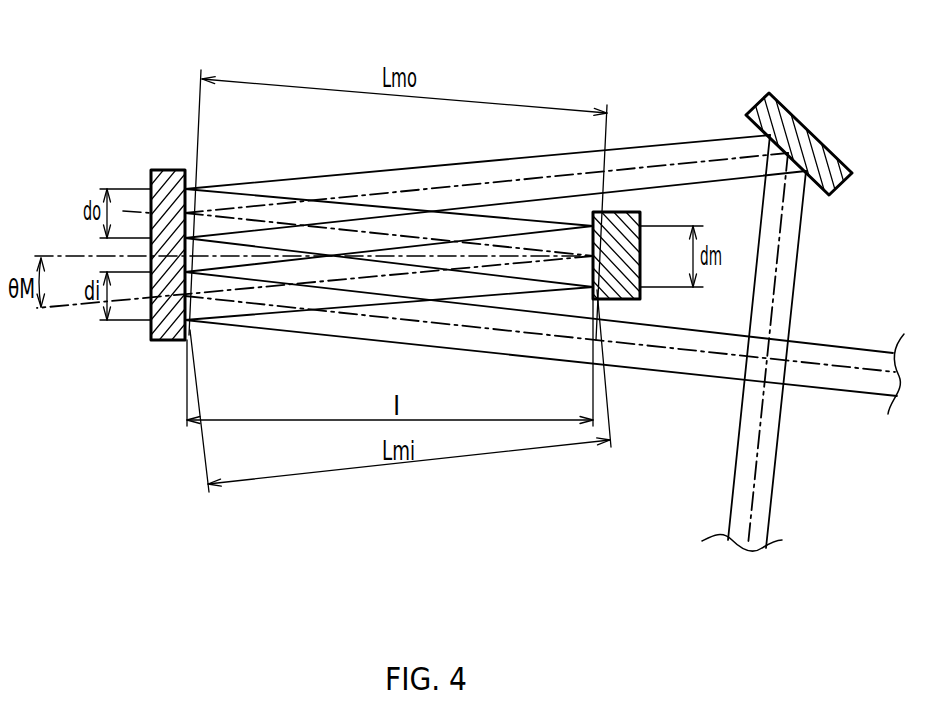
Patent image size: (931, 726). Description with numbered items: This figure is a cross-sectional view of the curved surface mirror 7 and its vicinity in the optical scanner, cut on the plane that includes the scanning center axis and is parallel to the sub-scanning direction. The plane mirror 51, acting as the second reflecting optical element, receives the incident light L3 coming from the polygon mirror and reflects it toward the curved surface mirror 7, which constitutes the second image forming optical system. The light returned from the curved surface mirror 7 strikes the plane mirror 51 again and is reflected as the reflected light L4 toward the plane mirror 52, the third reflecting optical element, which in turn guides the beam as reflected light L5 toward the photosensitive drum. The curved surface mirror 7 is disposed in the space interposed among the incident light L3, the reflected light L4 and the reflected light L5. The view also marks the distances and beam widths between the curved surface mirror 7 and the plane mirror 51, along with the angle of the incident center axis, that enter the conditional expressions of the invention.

The plane mirror 51 is at (160, 170).
The curved surface mirror 7 is at (641, 213).
The plane mirror 52 is at (787, 118).
The incident light L3 is at (673, 352).
The reflected light L4 is at (676, 167).
The reflected light L5 is at (773, 275).